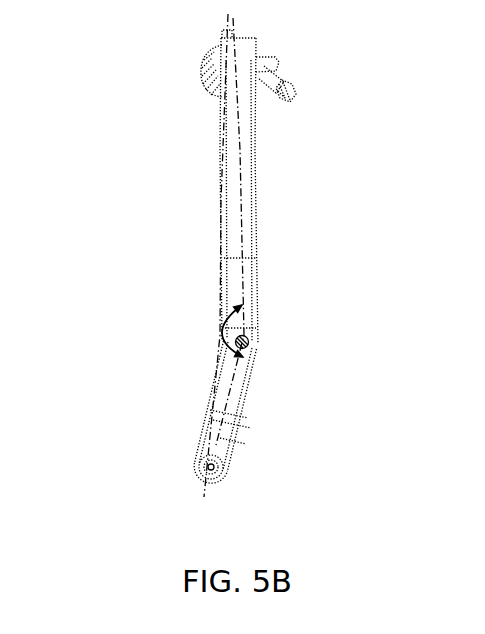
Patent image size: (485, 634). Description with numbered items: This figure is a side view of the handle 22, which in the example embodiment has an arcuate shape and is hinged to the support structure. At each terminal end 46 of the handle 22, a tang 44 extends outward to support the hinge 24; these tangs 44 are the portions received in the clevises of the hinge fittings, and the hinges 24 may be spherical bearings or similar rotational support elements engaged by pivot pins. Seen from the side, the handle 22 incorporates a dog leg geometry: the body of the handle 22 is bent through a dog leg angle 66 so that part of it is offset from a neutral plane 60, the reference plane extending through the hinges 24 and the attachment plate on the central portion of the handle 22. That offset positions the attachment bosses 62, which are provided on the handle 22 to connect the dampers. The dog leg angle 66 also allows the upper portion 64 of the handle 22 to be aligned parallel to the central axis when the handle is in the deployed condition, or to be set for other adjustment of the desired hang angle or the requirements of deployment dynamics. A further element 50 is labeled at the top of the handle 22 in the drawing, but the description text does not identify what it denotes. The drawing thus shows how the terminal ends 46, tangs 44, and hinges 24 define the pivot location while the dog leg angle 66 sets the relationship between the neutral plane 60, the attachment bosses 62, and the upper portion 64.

The handle 22 is at (255, 242).
The hinges 24 is at (207, 465).
The tangs 44 is at (225, 456).
The terminal ends 46 is at (233, 433).
The head 50 is at (215, 55).
The neutral plane 60 is at (218, 265).
The attachment bosses 62 is at (250, 344).
The upper portion 64 is at (240, 145).
The dog leg angle 66 is at (225, 333).